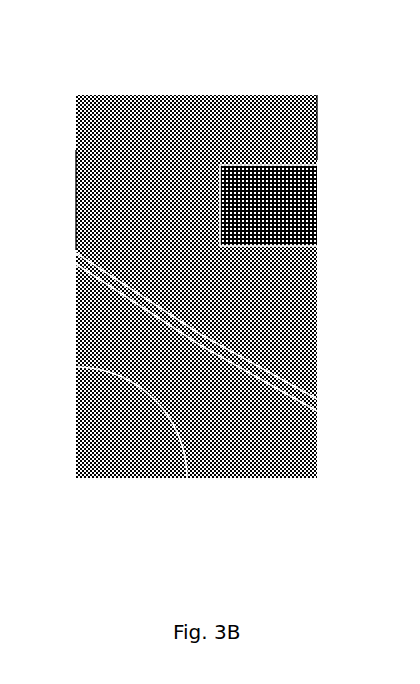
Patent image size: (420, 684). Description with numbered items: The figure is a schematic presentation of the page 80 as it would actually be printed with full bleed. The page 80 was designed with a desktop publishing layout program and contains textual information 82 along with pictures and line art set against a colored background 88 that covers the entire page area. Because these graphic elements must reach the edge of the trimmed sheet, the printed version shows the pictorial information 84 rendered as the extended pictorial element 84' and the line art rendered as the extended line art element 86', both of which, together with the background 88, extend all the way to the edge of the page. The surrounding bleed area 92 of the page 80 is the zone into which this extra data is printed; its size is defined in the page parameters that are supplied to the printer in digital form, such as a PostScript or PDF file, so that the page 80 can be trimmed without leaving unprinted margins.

The page 80 is at (198, 82).
The textual information 82 is at (78, 197).
The pictorial information 84 is at (111, 422).
The pictorial information extended to page edge 84' is at (296, 205).
The line art element extended to page edge 86' is at (174, 332).
The colored background 88 is at (78, 137).
The bleed area 92 is at (316, 122).